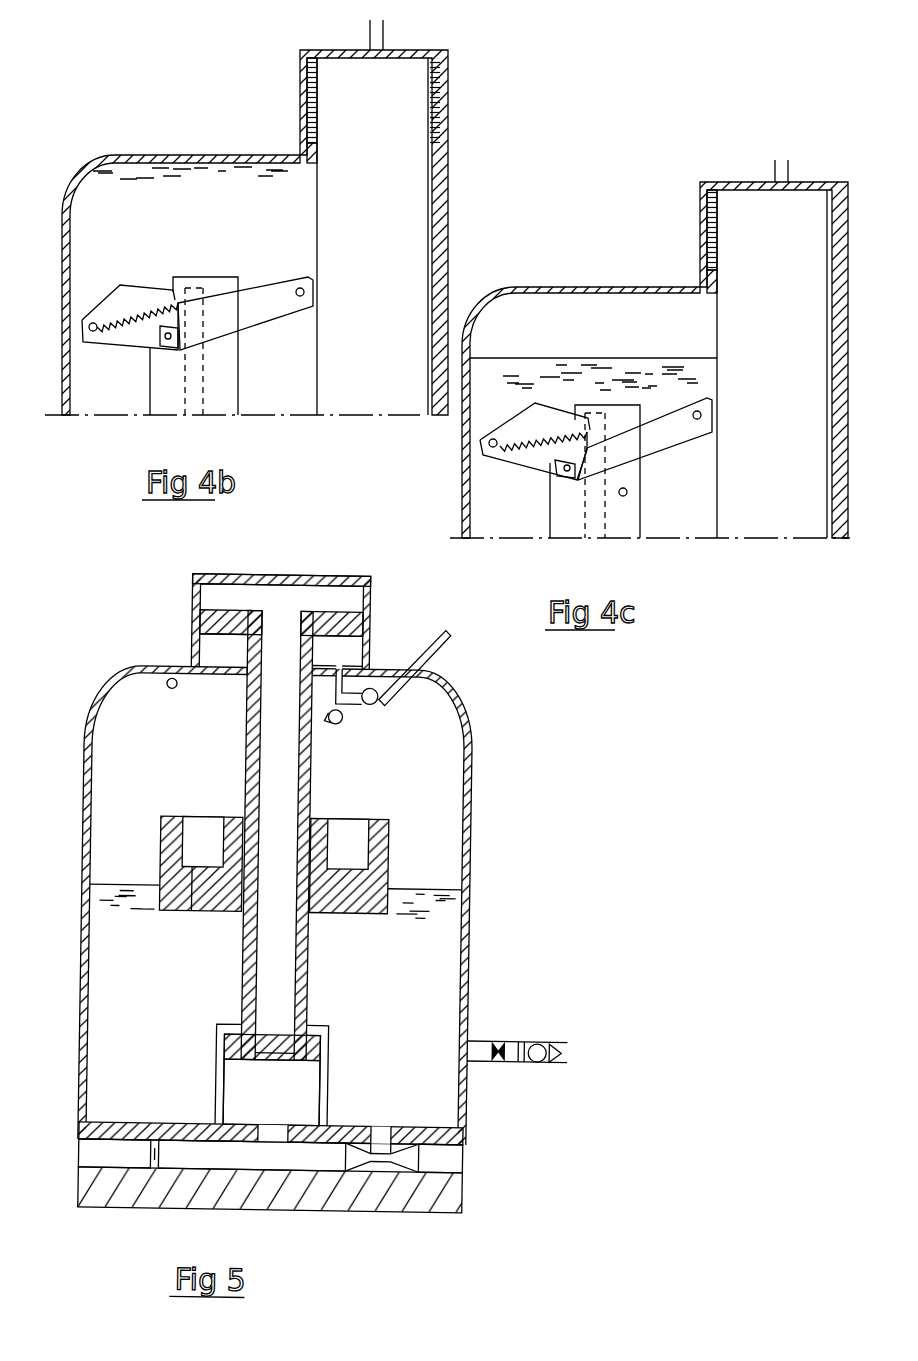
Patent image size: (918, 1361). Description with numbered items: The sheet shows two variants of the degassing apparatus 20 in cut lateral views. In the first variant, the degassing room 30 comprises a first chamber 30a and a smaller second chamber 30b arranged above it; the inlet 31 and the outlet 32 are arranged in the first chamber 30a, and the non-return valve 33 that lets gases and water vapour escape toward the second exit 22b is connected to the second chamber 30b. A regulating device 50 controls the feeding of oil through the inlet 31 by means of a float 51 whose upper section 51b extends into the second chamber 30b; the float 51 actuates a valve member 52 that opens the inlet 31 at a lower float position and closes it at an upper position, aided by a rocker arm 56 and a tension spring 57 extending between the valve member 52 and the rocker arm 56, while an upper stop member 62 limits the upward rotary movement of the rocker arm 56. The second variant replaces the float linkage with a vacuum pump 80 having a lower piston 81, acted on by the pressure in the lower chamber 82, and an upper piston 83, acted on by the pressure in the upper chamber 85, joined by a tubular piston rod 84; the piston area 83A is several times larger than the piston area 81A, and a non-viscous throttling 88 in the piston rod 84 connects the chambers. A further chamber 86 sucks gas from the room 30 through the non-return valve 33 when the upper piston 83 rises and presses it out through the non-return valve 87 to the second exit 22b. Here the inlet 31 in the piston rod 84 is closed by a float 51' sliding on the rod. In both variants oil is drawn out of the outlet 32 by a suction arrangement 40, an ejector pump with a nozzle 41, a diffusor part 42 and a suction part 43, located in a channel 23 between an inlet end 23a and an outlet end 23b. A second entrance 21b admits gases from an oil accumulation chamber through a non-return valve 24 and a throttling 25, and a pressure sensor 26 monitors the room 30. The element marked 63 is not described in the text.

In FIG. 5, the degassing apparatus 20 is at (508, 760).
In FIG. 5, the second entrance 21b is at (578, 1050).
In FIG. 5, the second exit 22b is at (463, 640).
In FIG. 5, the channel 23 is at (119, 1151).
In FIG. 5, the inlet end 23a is at (78, 1158).
In FIG. 5, the outlet end 23b is at (460, 1159).
In FIG. 5, the non-return valve 24 is at (542, 1040).
In FIG. 5, the throttling 25 is at (504, 1040).
In FIG. 5, the pressure sensor 26 is at (180, 692).
In FIG. 5, the degassing room 30 is at (118, 704).
In FIG. 4B, the first chamber 30a is at (182, 174).
In FIG. 4C, the first chamber 30a is at (611, 302).
In FIG. 4B, the second chamber 30b is at (298, 84).
In FIG. 4C, the second chamber 30b is at (706, 215).
In FIG. 4B, the inlet 31 is at (186, 291).
In FIG. 5, the inlet 31 is at (246, 812).
In FIG. 5, the outlet 32 is at (385, 1130).
In FIG. 5, the non-return valve 33 is at (340, 725).
In FIG. 5, the suction arrangement 40 is at (371, 1170).
In FIG. 5, the nozzle 41 is at (353, 1161).
In FIG. 5, the diffusor part 42 is at (410, 1151).
In FIG. 5, the suction part 43 is at (384, 1160).
In FIG. 5, the regulating device 50 is at (172, 791).
In FIG. 4B, the float 51 is at (342, 236).
In FIG. 4C, the float 51 is at (744, 364).
In FIG. 5, the float 51' is at (251, 853).
In FIG. 4B, the upper section 51b is at (420, 97).
In FIG. 4B, the valve member 52 is at (131, 292).
In FIG. 4C, the valve member 52 is at (535, 418).
In FIG. 4B, the rocker arm 56 is at (257, 309).
In FIG. 4C, the rocker arm 56 is at (659, 430).
In FIG. 4B, the tension spring 57 is at (118, 346).
In FIG. 4C, the tension spring 57 is at (517, 462).
In FIG. 4C, the upper stop member 62 is at (623, 421).
In FIG. 4B, the corner seal 63 is at (318, 157).
In FIG. 5, the vacuum pump 80 is at (314, 962).
In FIG. 5, the lower piston 81 is at (320, 1051).
In FIG. 5, the piston area 81A is at (241, 1062).
In FIG. 5, the lower chamber 82 is at (309, 1083).
In FIG. 5, the upper piston 83 is at (353, 624).
In FIG. 5, the piston area 83A is at (343, 593).
In FIG. 5, the tubular piston rod 84 is at (316, 778).
In FIG. 5, the upper chamber 85 is at (200, 596).
In FIG. 5, the further chamber 86 is at (352, 657).
In FIG. 5, the non-return valve 87 is at (378, 705).
In FIG. 5, the non-viscous throttling 88 is at (276, 1051).